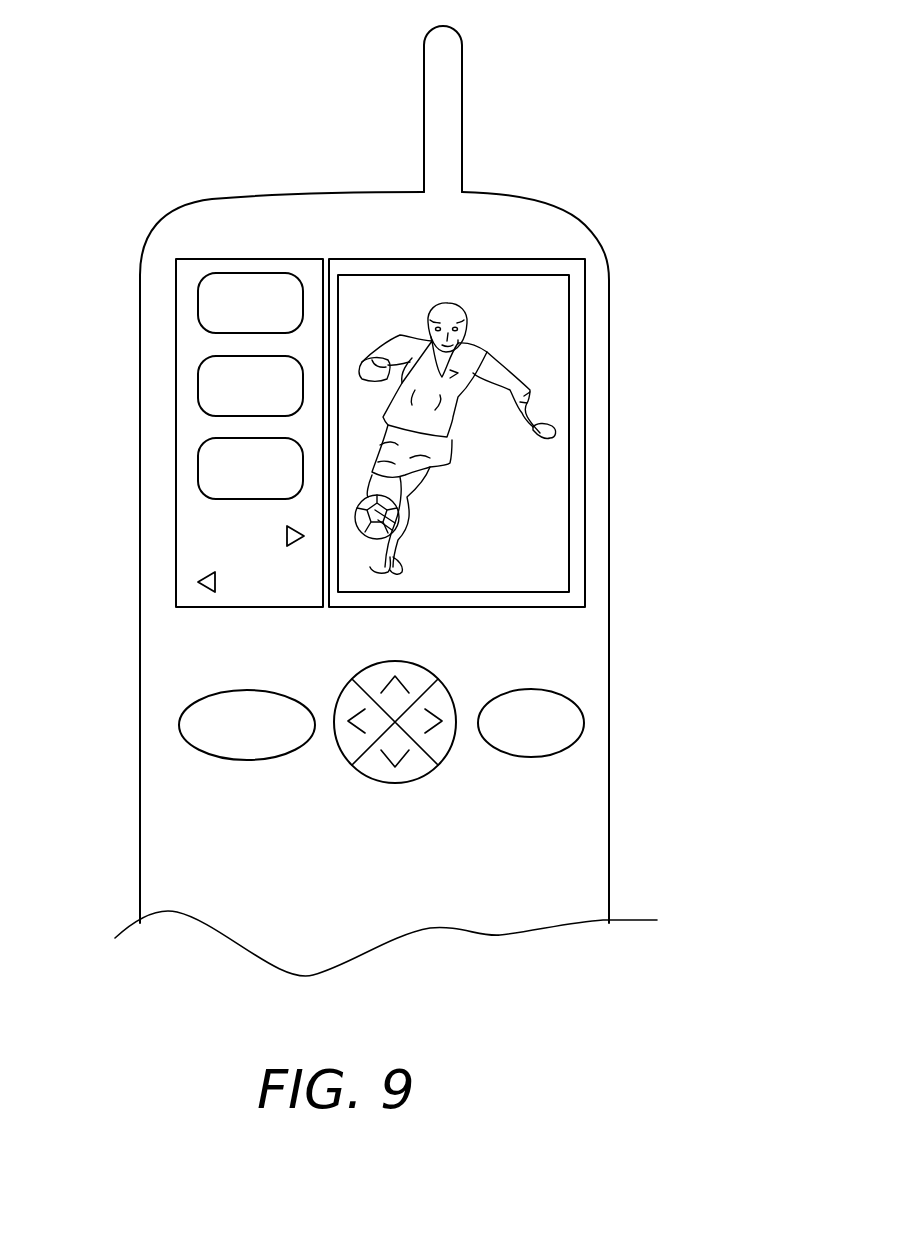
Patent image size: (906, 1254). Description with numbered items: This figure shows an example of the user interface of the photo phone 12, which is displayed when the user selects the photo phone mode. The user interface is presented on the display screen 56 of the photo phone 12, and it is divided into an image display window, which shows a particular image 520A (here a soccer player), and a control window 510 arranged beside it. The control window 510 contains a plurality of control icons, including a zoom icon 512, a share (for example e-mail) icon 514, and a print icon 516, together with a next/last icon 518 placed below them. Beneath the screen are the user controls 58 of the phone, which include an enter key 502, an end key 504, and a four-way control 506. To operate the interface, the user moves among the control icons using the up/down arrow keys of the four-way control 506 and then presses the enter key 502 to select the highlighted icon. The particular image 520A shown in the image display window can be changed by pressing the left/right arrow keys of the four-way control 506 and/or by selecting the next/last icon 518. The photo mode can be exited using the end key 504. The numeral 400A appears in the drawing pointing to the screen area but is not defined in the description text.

The photo phone 12 is at (587, 225).
The display screen 400A is at (355, 265).
The display screen 56 is at (570, 335).
The image 520A is at (550, 500).
The control window 510 is at (187, 430).
The zoom icon 512 is at (208, 293).
The share icon 514 is at (213, 368).
The print icon 516 is at (200, 467).
The next/last icon 518 is at (185, 557).
The user controls 58 is at (320, 771).
The enter key 502 is at (268, 750).
The end key 504 is at (522, 745).
The 4-way control 506 is at (373, 770).